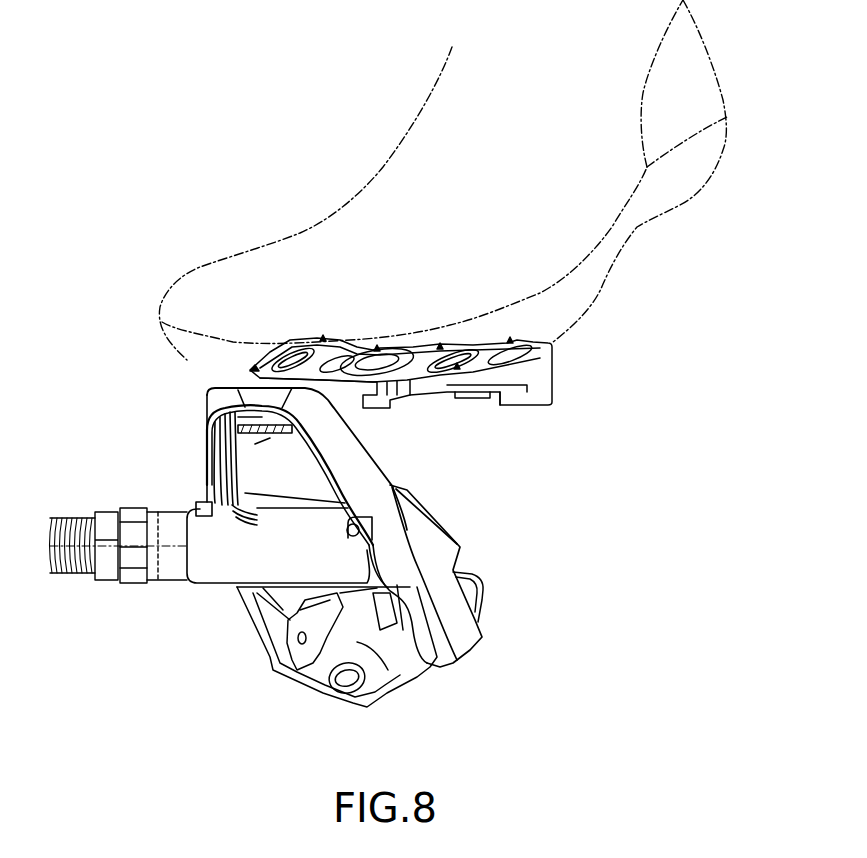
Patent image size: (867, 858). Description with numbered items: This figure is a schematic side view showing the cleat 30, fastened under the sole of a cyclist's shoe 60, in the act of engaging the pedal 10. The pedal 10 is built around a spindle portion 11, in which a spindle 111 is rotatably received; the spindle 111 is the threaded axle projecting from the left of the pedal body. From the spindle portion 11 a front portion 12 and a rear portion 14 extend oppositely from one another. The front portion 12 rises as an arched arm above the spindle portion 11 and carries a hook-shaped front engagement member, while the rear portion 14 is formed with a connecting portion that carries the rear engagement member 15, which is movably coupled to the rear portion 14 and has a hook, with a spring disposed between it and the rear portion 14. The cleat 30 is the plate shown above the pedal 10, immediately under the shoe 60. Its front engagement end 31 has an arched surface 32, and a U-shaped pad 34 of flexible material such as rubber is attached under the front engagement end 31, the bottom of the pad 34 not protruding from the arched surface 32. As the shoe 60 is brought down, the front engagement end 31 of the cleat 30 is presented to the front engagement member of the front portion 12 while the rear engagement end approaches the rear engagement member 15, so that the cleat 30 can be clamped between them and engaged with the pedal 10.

The pedal 10 is at (244, 633).
The spindle portion 11 is at (268, 560).
The spindle 111 is at (117, 580).
The front portion 12 is at (267, 516).
The rear portion 14 is at (463, 620).
The rear engagement member 15 is at (488, 588).
The cleat 30 is at (558, 375).
The front engagement end 31 is at (262, 446).
The arched surface 32 is at (262, 417).
The U-shaped pad 34 is at (238, 427).
The cyclist's shoe 60 is at (587, 263).